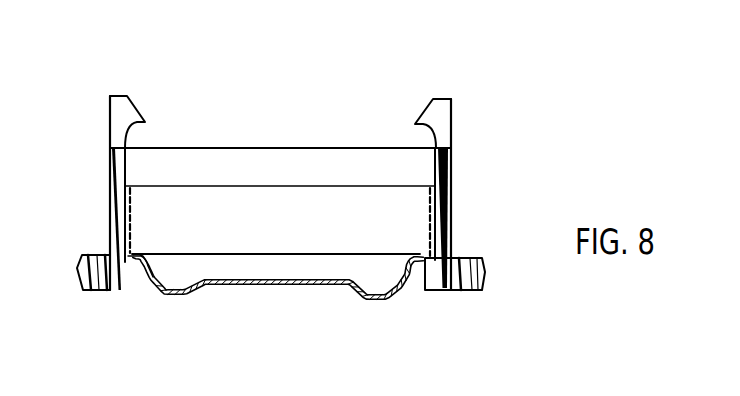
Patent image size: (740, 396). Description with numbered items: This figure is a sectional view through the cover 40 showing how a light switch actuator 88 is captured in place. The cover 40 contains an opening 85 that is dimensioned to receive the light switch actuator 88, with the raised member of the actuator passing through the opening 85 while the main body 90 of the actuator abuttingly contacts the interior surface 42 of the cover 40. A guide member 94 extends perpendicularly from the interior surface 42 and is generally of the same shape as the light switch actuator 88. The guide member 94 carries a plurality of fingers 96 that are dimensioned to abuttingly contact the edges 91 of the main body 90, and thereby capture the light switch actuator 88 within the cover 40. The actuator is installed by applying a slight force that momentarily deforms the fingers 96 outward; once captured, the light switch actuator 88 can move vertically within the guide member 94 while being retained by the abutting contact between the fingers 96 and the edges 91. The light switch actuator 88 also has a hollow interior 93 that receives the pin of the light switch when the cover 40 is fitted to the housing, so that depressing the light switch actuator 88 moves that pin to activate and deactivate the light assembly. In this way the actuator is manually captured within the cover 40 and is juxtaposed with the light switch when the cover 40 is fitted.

The cover 40 is at (95, 285).
The interior surface 42 is at (128, 278).
The opening 85 is at (418, 281).
The light switch actuator 88 is at (408, 202).
The main body 90 is at (427, 237).
The edges 91 is at (305, 188).
The hollow interior 93 is at (332, 242).
The guide member 94 is at (252, 158).
The fingers 96 is at (121, 121).